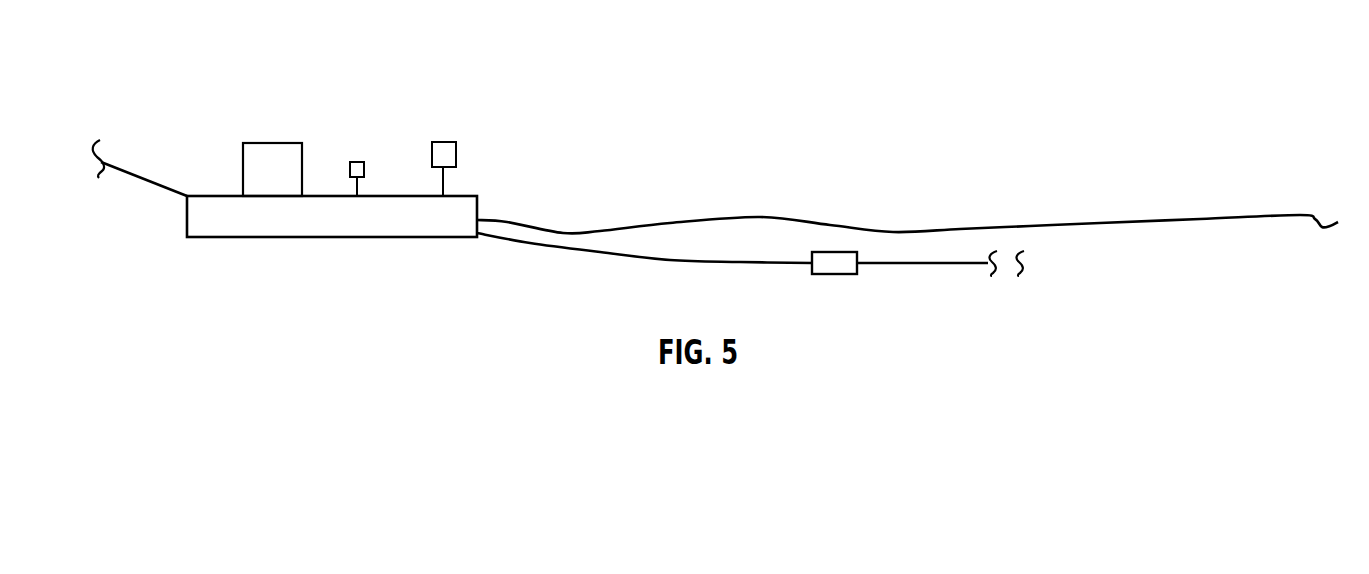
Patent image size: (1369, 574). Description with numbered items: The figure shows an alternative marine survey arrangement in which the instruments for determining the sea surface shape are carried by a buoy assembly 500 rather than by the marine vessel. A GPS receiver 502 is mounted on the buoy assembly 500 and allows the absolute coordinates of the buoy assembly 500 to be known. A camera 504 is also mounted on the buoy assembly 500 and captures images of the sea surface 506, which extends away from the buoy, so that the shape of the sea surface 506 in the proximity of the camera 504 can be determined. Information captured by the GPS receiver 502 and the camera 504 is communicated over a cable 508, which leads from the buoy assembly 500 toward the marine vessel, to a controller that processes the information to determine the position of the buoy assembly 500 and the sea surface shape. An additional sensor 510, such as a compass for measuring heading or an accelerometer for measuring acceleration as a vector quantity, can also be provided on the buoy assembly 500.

The buoy assembly 500 is at (340, 237).
The GPS receiver 502 is at (268, 143).
The camera 504 is at (452, 142).
The sea surface 506 is at (1100, 223).
The cable 508 is at (132, 168).
The additional sensor 510 is at (359, 162).